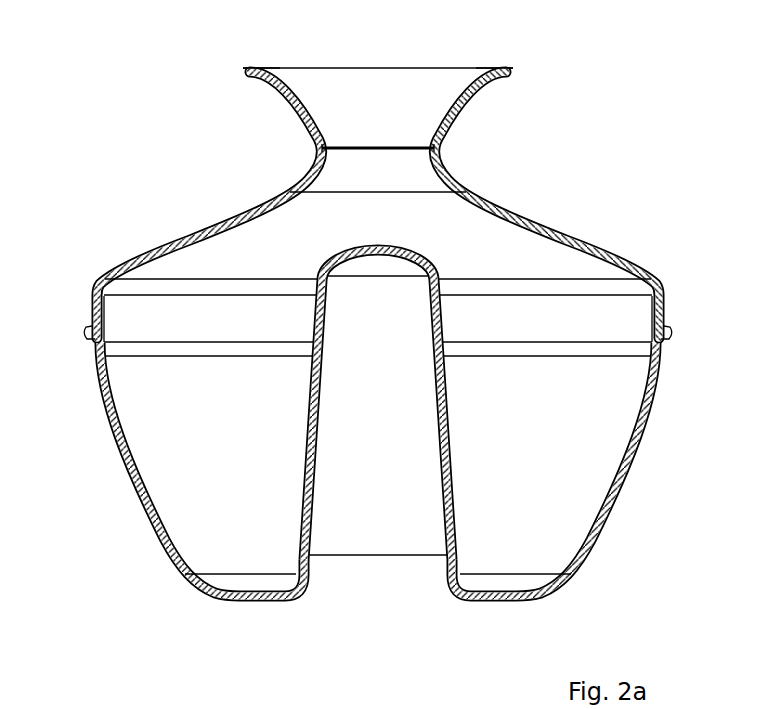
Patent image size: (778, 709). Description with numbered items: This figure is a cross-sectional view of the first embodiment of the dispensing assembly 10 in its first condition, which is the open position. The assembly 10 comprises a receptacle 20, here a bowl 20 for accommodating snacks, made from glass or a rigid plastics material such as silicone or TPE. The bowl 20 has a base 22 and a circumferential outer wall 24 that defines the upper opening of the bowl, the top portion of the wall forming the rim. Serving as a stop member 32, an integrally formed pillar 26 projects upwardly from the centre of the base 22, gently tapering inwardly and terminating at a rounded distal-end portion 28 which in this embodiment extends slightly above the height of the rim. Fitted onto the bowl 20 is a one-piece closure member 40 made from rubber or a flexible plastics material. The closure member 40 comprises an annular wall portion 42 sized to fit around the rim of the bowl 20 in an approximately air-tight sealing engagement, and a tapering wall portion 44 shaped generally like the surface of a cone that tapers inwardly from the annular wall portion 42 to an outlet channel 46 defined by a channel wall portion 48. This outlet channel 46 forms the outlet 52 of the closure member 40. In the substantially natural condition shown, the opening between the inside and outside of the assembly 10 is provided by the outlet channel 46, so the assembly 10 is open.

The dispensing assembly 10 is at (622, 88).
The receptacle 20 is at (656, 394).
The base 22 is at (214, 603).
The outer wall 24 is at (99, 394).
The pillar 26 is at (466, 405).
The rounded distal-end portion 28 is at (320, 252).
The stop member 32 is at (446, 394).
The closure member 40 is at (188, 222).
The annular wall portion 42 is at (665, 300).
The tapering wall portion 44 is at (510, 206).
The outlet channel 46 is at (392, 107).
The channel wall portion 48 is at (462, 117).
The outlet 52 is at (422, 92).